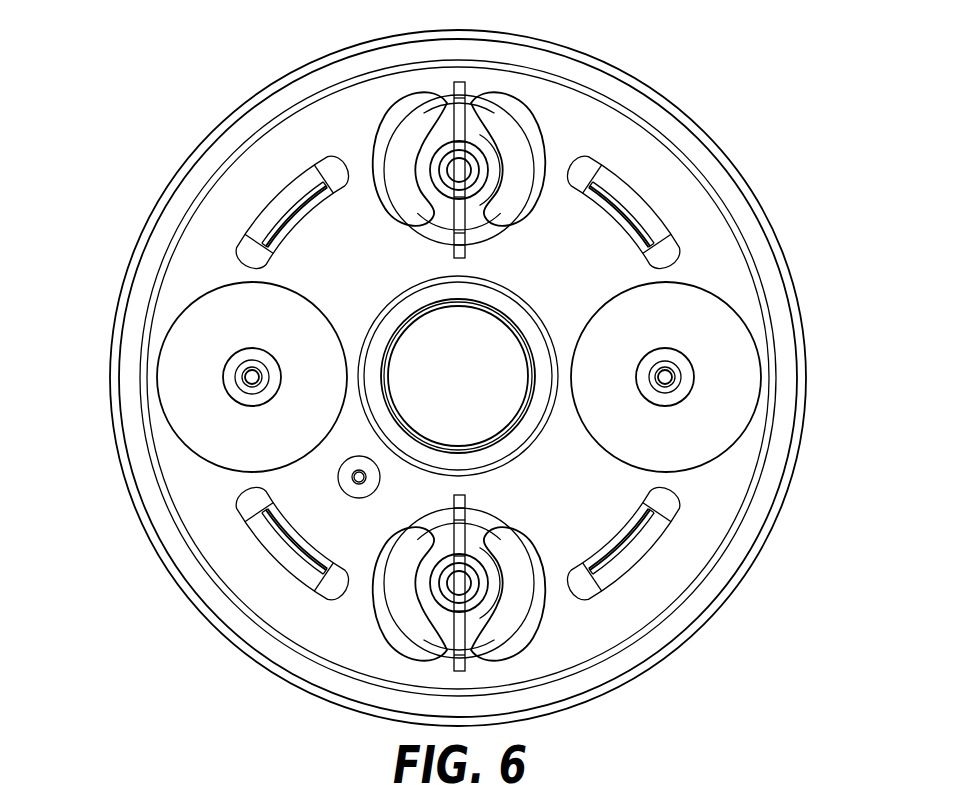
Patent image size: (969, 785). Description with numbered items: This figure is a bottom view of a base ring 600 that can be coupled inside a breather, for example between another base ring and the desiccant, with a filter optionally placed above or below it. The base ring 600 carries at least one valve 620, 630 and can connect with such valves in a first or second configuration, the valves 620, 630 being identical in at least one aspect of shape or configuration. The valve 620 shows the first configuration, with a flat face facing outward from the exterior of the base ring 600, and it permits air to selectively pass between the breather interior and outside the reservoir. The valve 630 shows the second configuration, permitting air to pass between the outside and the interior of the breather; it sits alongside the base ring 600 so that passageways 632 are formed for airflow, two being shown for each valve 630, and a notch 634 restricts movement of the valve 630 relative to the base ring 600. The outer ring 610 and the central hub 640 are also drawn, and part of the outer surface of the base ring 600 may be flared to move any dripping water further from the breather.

The base ring 600 is at (143, 620).
The outer ring / housing 610 is at (732, 155).
The valve 620 is at (202, 422).
The valve 630 is at (513, 133).
The passageway 632 is at (497, 118).
The notch 634 is at (461, 170).
The central hub 640 is at (472, 393).